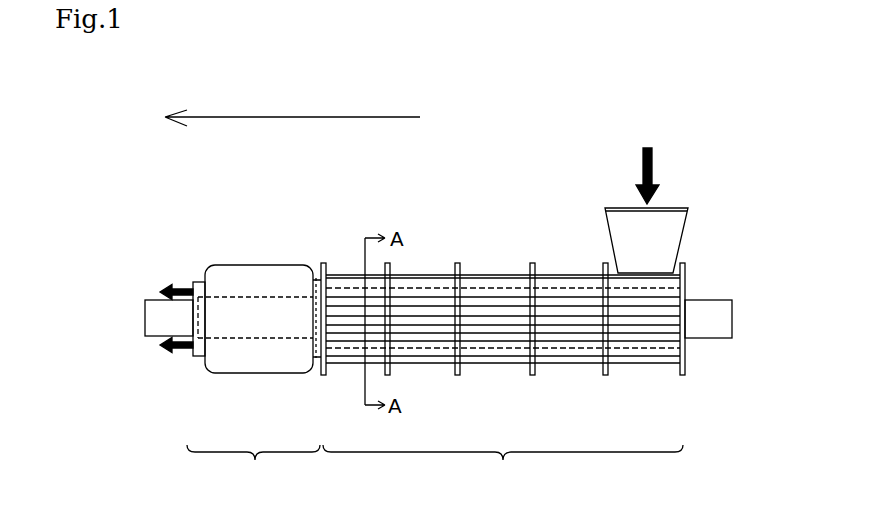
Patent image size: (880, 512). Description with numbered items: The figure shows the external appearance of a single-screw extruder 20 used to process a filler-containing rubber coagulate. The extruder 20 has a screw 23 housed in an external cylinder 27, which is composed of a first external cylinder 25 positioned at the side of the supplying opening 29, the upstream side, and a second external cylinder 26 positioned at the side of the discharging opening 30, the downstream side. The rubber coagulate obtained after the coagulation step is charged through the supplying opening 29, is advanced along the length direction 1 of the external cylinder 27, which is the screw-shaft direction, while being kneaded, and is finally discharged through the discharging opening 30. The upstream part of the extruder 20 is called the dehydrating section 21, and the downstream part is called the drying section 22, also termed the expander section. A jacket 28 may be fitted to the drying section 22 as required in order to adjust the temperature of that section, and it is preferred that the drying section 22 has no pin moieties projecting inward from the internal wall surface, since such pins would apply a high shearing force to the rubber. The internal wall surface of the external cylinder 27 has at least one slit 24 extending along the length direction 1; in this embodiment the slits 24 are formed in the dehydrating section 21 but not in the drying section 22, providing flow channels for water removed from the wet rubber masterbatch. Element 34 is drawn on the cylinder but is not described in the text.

The length direction of the external cylinder 1 is at (322, 110).
The single-screw extruder 20 is at (506, 152).
The dehydrating section 21 is at (504, 376).
The drying section 22 is at (253, 466).
The screw 23 is at (707, 308).
The slit 24 is at (466, 308).
The first external cylinder 25 is at (452, 300).
The second external cylinder 26 is at (323, 262).
The external cylinder 27 is at (497, 302).
The jacket 28 is at (228, 275).
The supplying opening 29 is at (673, 208).
The discharging opening 30 is at (193, 357).
The support flange 34 is at (604, 375).